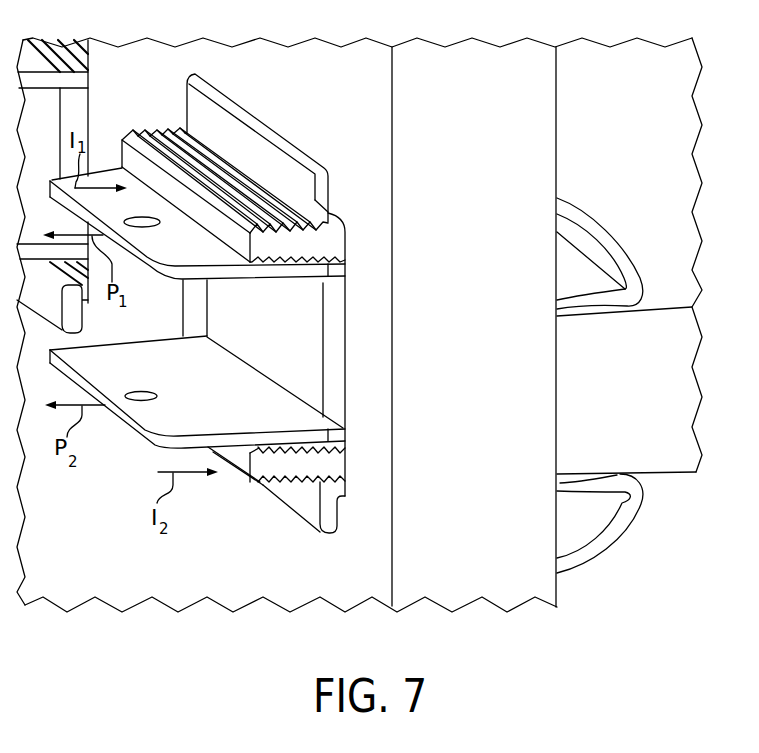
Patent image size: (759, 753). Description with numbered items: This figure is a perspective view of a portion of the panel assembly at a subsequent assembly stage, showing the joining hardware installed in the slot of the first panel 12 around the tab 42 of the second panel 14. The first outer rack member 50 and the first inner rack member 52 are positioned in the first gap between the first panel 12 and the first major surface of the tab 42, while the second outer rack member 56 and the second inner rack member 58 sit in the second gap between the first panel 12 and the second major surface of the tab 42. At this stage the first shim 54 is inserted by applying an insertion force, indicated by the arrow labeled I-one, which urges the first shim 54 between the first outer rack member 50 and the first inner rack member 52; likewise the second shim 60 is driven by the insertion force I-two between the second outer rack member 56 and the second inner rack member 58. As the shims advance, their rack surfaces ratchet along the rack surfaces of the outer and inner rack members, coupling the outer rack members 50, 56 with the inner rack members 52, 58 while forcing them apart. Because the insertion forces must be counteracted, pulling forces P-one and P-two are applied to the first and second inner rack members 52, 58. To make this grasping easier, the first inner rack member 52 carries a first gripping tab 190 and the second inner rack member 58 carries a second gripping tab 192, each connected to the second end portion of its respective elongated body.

The first panel 12 is at (305, 60).
The second panel 14 is at (675, 222).
The tab 42 is at (290, 333).
The first outer rack member 50 is at (311, 150).
The first inner rack member 52 is at (347, 268).
The first shim 54 is at (147, 127).
The second outer rack member 56 is at (293, 517).
The second inner rack member 58 is at (347, 436).
The second shim 60 is at (267, 487).
The first gripping tab 190 is at (173, 277).
The second gripping tab 192 is at (166, 435).